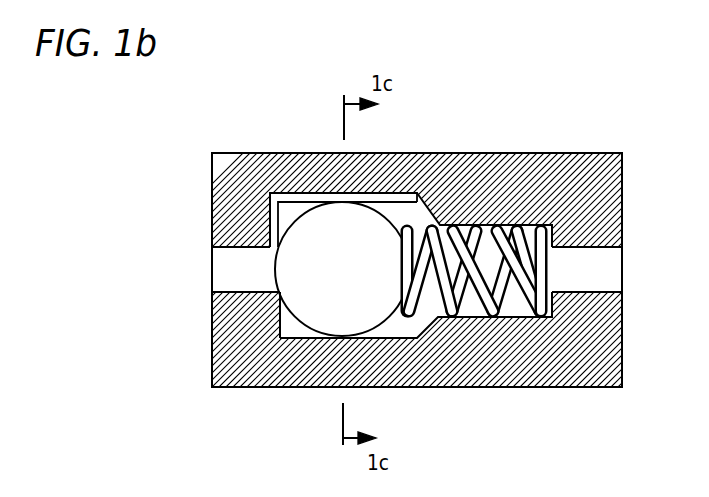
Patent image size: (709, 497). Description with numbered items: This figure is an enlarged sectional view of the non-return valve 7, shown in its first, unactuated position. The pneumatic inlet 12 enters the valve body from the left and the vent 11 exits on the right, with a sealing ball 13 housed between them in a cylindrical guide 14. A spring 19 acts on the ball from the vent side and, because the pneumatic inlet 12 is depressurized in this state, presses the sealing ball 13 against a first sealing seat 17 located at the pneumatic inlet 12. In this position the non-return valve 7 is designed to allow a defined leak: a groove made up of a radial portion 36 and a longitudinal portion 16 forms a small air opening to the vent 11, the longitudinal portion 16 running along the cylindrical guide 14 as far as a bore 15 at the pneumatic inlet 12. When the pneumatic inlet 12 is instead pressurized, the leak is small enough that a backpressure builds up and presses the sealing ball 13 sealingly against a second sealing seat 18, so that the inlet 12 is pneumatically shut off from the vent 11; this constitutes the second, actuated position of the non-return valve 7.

The non-return valve 7 is at (638, 169).
The vent 11 is at (607, 273).
The pneumatic inlet 12 is at (218, 268).
The sealing ball 13 is at (370, 223).
The cylindrical guide 14 is at (397, 340).
The bore 15 is at (248, 252).
The longitudinal portion of groove 16 is at (304, 197).
The first sealing seat 17 is at (268, 296).
The second sealing seat 18 is at (460, 188).
The spring 19 is at (489, 292).
The radial portion of groove 36 is at (277, 205).